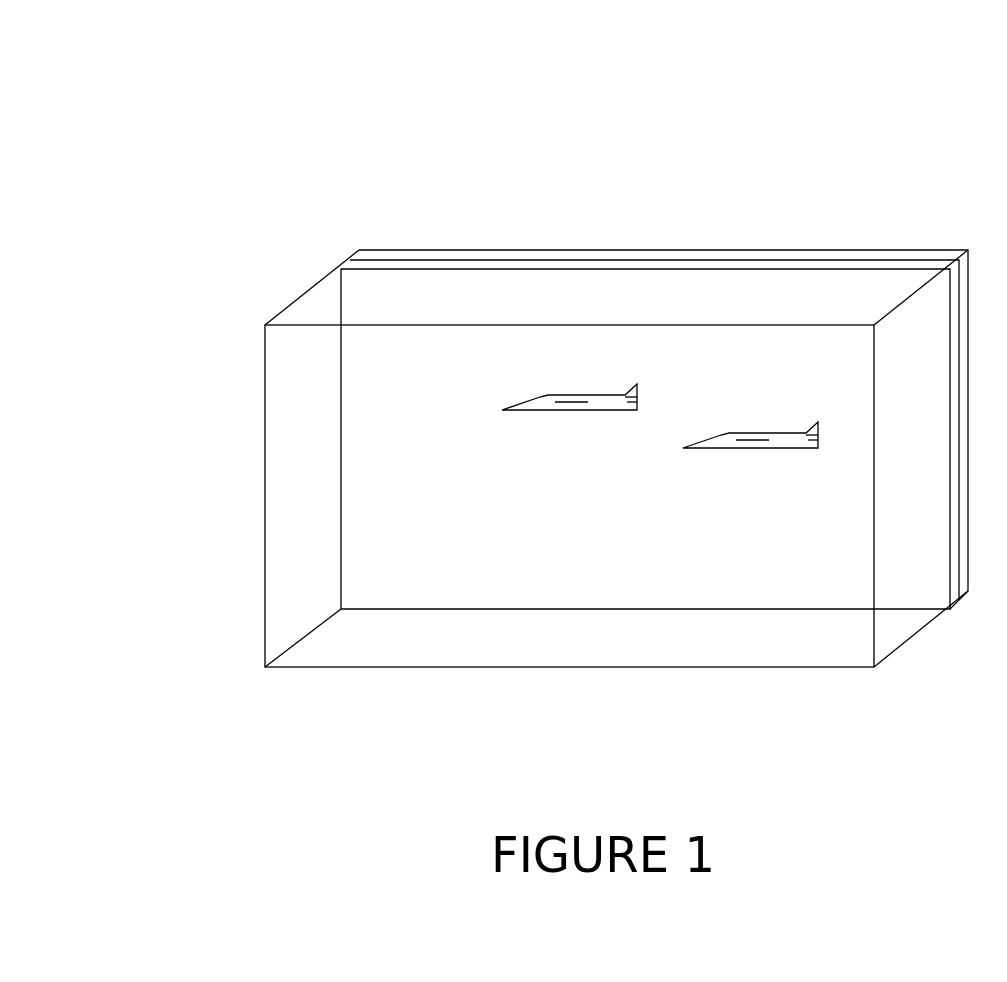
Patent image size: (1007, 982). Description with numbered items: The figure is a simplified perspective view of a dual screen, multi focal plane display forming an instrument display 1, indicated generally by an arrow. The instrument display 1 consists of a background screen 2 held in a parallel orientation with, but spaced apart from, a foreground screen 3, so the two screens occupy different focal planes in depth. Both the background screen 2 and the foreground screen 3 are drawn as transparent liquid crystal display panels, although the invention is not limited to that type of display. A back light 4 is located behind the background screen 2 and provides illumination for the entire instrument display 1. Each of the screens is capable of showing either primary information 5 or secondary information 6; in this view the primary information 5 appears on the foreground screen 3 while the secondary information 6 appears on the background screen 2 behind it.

The instrument display 1 is at (564, 401).
The background screen 2 is at (327, 298).
The foreground screen 3 is at (486, 314).
The back light 4 is at (772, 239).
The primary information 5 is at (517, 438).
The secondary information 6 is at (731, 472).